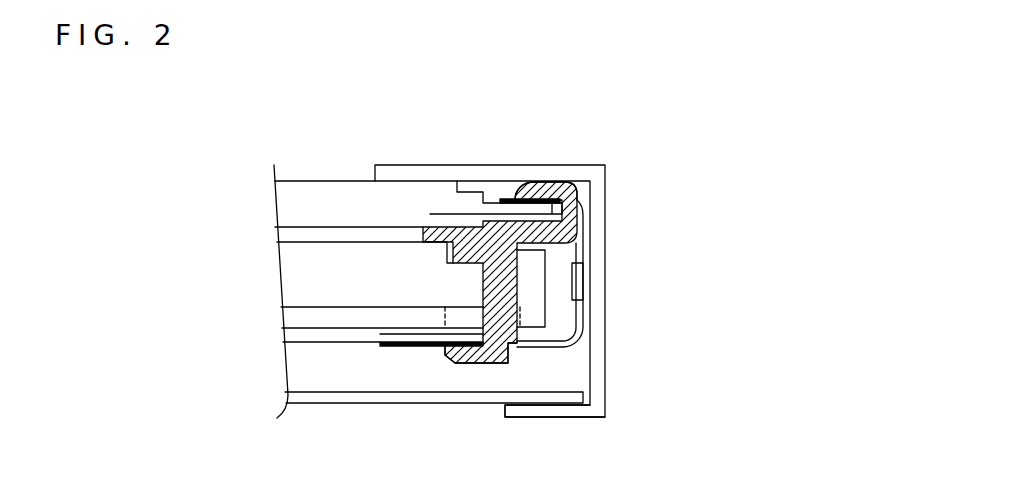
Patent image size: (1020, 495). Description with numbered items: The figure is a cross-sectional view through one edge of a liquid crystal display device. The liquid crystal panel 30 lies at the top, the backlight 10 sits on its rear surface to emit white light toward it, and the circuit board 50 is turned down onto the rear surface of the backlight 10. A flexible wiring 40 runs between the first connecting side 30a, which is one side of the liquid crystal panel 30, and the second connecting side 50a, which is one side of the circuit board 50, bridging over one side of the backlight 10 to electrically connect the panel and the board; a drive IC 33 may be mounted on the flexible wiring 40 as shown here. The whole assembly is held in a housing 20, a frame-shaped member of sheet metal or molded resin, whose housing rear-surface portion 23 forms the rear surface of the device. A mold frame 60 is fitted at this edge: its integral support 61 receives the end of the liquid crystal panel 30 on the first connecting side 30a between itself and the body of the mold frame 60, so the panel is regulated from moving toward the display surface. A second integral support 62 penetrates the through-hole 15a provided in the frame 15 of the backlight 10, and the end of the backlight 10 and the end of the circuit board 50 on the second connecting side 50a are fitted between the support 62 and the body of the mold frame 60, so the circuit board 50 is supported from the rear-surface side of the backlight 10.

The backlight 10 is at (216, 243).
The frame 15 is at (297, 320).
The through-hole 15a is at (455, 305).
The housing 20 is at (589, 172).
The housing rear-surface portion 23 is at (497, 417).
The liquid crystal panel 30 is at (305, 209).
The first connecting side 30a is at (430, 214).
The drive IC 33 is at (577, 283).
The flexible wiring 40 is at (585, 330).
The circuit board 50 is at (337, 342).
The second connecting side 50a is at (390, 334).
The mold frame 60 is at (520, 262).
The support 61 is at (553, 182).
The support 62 is at (465, 358).